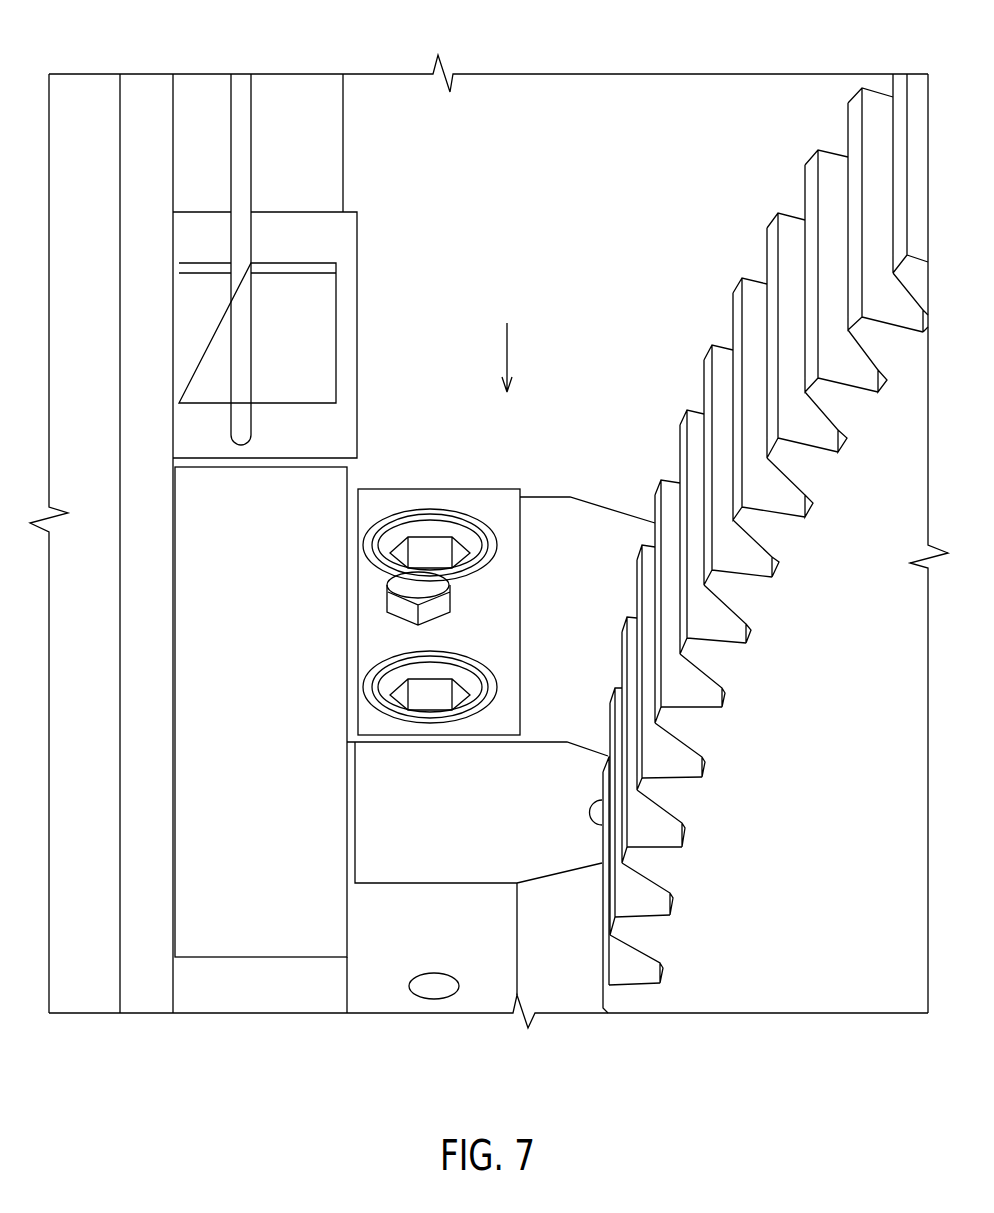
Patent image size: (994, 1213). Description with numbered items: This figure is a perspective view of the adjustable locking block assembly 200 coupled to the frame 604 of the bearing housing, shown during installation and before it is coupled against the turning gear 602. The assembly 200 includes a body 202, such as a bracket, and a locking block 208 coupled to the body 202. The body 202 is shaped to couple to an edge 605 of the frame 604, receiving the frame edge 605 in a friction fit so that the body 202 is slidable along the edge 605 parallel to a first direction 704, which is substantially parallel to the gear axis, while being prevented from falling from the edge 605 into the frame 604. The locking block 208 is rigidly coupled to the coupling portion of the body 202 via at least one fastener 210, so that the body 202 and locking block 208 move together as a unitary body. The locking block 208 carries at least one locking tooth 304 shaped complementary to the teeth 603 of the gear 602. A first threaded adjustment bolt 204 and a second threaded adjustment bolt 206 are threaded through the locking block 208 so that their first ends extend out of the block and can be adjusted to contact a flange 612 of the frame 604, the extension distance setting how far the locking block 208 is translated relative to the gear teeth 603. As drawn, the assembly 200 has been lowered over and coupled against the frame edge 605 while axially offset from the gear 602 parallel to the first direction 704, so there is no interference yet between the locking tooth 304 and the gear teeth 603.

The adjustable locking block assembly 200 is at (414, 415).
The body 202 is at (348, 225).
The first threaded adjustment bolt 204 is at (427, 532).
The second threaded adjustment bolt 206 is at (415, 670).
The locking block 208 is at (543, 515).
The fastener 210 is at (452, 600).
The locking tooth 304 is at (619, 561).
The gear 602 is at (830, 977).
The teeth 603 is at (918, 100).
The frame 604 is at (293, 935).
The edge 605 is at (287, 83).
The flange 612 is at (480, 975).
The first direction 704 is at (508, 358).